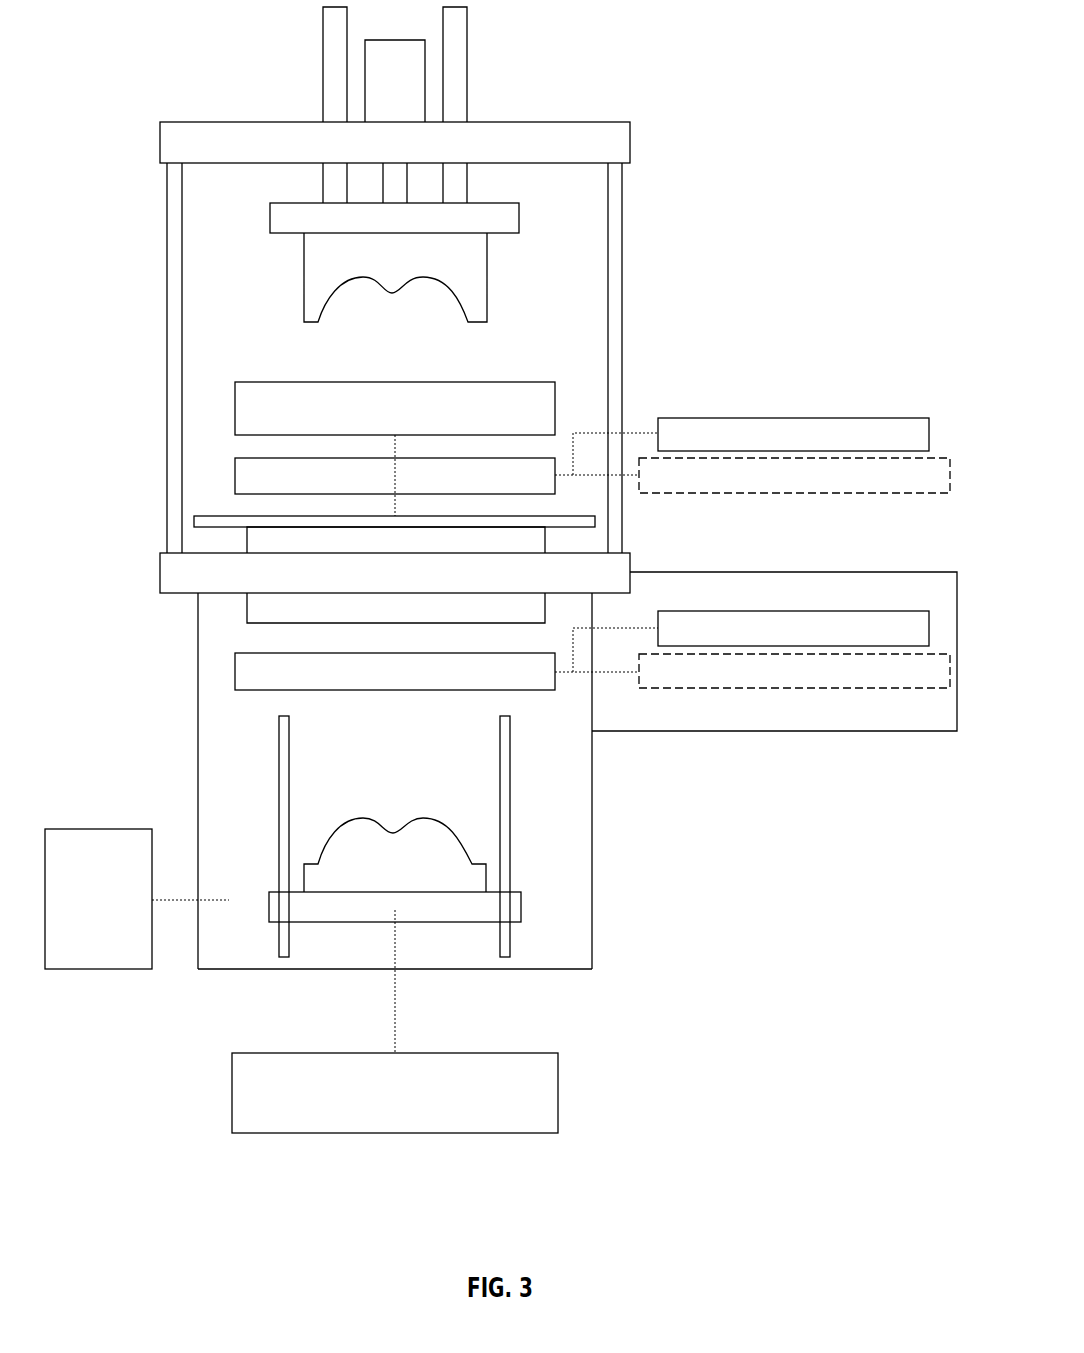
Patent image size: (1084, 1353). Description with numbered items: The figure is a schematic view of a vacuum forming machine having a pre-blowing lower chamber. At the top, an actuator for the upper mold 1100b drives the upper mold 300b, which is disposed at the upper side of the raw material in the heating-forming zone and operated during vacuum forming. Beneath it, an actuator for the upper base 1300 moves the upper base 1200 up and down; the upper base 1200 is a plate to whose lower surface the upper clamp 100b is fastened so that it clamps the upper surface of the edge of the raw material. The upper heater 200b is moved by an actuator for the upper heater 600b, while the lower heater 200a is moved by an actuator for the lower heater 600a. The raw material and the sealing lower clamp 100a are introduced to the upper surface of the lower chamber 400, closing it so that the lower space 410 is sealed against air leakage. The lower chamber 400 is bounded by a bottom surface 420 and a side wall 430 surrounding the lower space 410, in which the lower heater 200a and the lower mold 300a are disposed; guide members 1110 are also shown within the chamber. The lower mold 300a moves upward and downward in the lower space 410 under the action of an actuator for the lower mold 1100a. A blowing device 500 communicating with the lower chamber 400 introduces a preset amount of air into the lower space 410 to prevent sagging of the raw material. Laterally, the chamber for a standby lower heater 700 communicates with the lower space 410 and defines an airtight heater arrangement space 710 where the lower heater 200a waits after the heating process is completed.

The actuator for the upper mold 1100b is at (475, 58).
The upper mold 300b is at (478, 272).
The actuator for the upper base 1300 is at (235, 410).
The upper heater 200b is at (235, 478).
The upper base 1200 is at (194, 520).
The upper clamp 100b is at (247, 542).
The sealing lower clamp 100a is at (247, 605).
The lower heater 200a is at (235, 668).
The actuator for the upper heater 600b is at (777, 418).
The actuator for the lower heater 600a is at (776, 611).
The chamber for a standby lower heater 700 is at (822, 731).
The heater arrangement space 710 is at (729, 721).
The lower chamber 400 is at (451, 820).
The lower space 410 is at (458, 736).
The bottom surface 420 is at (543, 970).
The side wall 430 is at (592, 912).
The guide rod 1110 is at (279, 767).
The lower mold 300a is at (365, 830).
The blowing device 500 is at (100, 962).
The actuator for the lower mold 1100a is at (393, 1133).